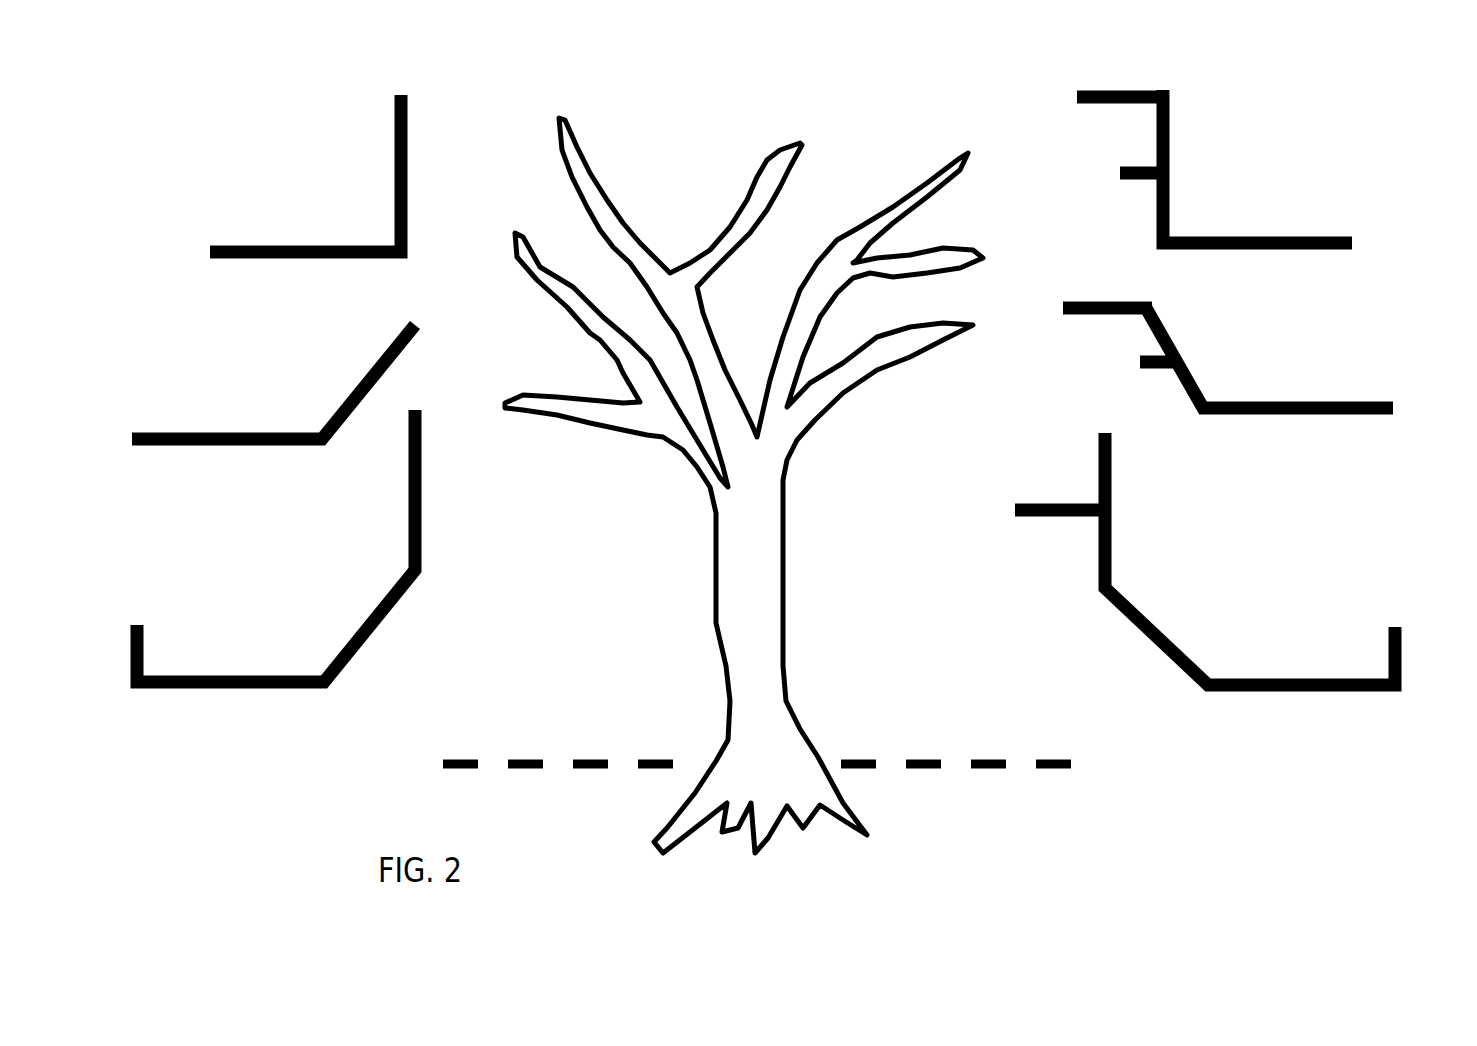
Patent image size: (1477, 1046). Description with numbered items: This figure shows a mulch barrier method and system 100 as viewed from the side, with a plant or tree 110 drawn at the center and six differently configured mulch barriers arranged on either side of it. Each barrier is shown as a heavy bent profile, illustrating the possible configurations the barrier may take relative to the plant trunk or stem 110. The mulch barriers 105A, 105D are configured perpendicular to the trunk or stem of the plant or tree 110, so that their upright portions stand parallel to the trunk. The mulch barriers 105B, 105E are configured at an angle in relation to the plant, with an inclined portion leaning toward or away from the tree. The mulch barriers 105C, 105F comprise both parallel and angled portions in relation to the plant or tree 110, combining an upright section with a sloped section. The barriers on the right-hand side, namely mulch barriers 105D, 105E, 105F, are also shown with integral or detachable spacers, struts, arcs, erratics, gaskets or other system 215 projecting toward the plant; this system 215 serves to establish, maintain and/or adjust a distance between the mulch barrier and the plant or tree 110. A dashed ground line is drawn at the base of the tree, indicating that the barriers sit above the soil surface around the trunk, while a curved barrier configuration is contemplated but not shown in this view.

The mulch barrier method and system 100 is at (775, 75).
The plant or tree 110 is at (749, 629).
The mulch barrier 105A is at (335, 183).
The mulch barrier 105B is at (307, 395).
The mulch barrier 105C is at (307, 595).
The mulch barrier 105D is at (1232, 183).
The mulch barrier 105E is at (1277, 370).
The mulch barrier 105F is at (1217, 590).
The spacer system 215 is at (1097, 120).